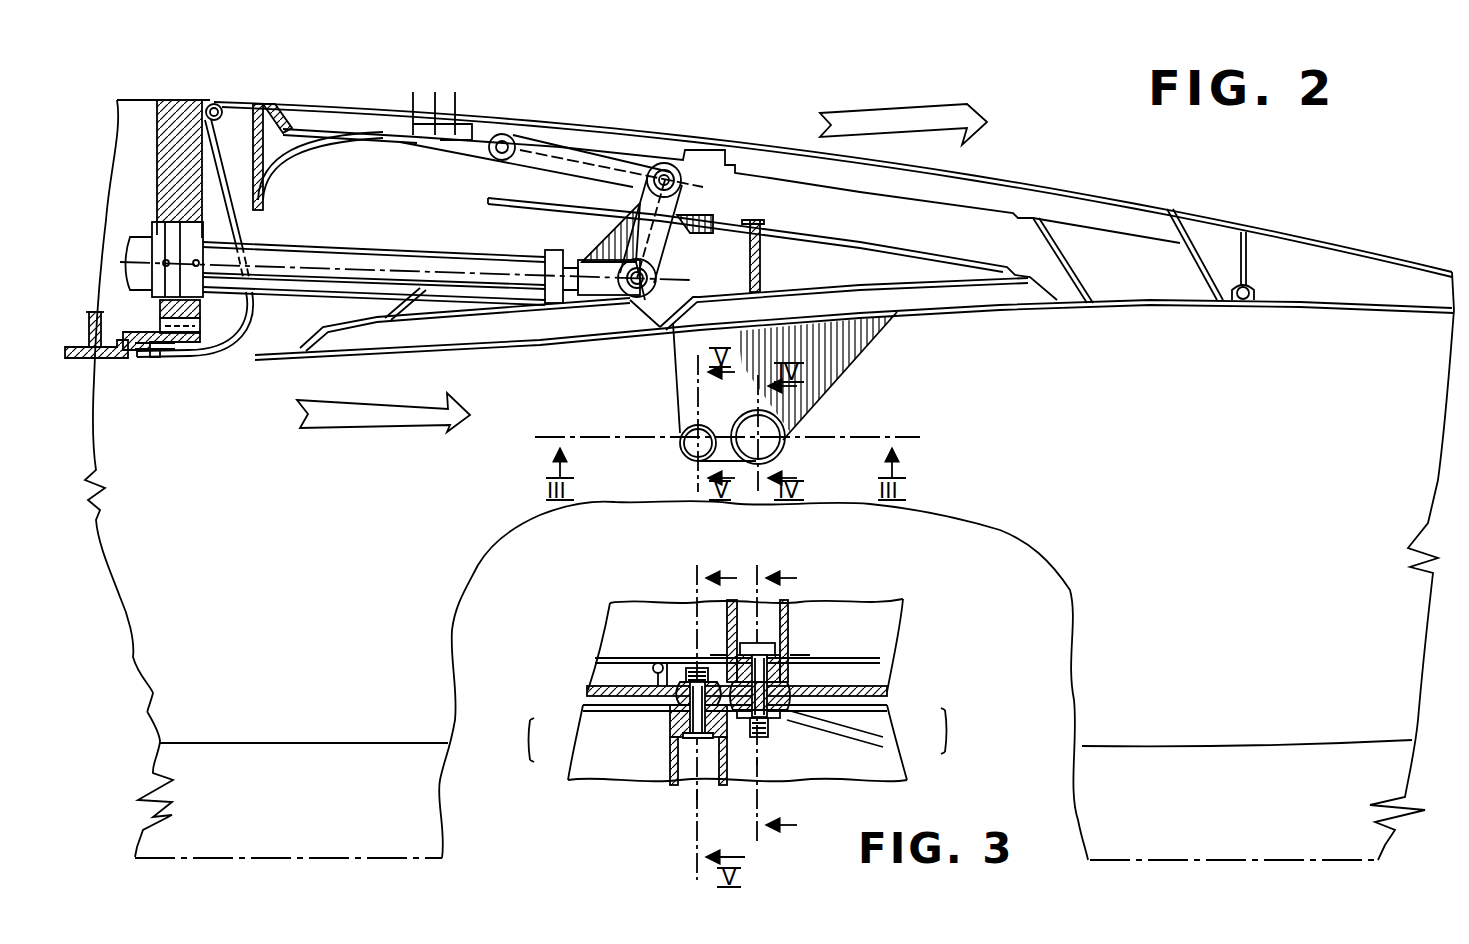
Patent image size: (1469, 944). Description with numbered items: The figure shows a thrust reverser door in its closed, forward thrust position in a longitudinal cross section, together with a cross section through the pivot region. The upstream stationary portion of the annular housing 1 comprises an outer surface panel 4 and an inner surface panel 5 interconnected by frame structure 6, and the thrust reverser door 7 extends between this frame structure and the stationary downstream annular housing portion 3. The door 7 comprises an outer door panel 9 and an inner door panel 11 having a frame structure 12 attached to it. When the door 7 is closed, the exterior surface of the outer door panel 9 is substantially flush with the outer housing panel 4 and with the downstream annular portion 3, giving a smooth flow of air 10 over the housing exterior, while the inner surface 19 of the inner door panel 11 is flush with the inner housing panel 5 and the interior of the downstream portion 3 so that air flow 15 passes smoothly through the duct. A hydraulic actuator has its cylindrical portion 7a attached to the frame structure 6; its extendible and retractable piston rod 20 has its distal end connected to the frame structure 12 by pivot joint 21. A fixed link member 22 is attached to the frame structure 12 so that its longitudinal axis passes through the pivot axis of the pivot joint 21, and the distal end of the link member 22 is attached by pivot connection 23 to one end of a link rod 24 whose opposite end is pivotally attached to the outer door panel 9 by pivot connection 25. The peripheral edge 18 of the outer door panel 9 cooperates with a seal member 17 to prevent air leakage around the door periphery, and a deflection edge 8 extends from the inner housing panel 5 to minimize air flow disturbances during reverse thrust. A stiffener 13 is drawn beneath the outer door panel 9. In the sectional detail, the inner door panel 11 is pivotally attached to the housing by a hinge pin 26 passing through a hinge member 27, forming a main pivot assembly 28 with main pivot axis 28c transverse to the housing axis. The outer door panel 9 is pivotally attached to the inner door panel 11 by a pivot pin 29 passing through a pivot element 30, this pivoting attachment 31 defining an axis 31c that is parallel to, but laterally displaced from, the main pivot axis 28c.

In FIG. 2, the annular housing 1 is at (116, 106).
In FIG. 2, the downstream annular housing portion 3 is at (1290, 233).
In FIG. 2, the outer surface panel 4 is at (180, 98).
In FIG. 2, the inner surface panel 5 is at (97, 360).
In FIG. 2, the frame structure 6 is at (150, 322).
In FIG. 2, the thrust reverser door 7 is at (998, 165).
In FIG. 2, the cylindrical portion 7a is at (306, 248).
In FIG. 2, the deflection edge 8 is at (250, 330).
In FIG. 2, the outer door panel 9 is at (1082, 212).
In FIG. 3, the outer door panel 9 is at (600, 690).
In FIG. 2, the flow of air 10 is at (848, 118).
In FIG. 2, the inner door panel 11 is at (425, 336).
In FIG. 3, the inner door panel 11 is at (852, 715).
In FIG. 2, the frame structure 12 is at (749, 218).
In FIG. 2, the stiffener 13 is at (276, 120).
In FIG. 2, the air flow 15 is at (400, 414).
In FIG. 2, the seal member 17 is at (215, 104).
In FIG. 2, the peripheral edge 18 is at (226, 103).
In FIG. 2, the inner surface 19 is at (525, 343).
In FIG. 2, the piston rod 20 is at (572, 296).
In FIG. 2, the pivot joint 21 is at (647, 302).
In FIG. 2, the fixed link member 22 is at (646, 165).
In FIG. 2, the pivot connection 23 is at (668, 166).
In FIG. 2, the link rod 24 is at (557, 145).
In FIG. 2, the pivot connection 25 is at (503, 130).
In FIG. 3, the hinge pin 26 is at (790, 713).
In FIG. 3, the hinge member 27 is at (790, 735).
In FIG. 2, the main pivot assembly 28 is at (762, 440).
In FIG. 3, the main pivot assembly 28 is at (857, 679).
In FIG. 3, the main pivot axis 28c is at (757, 757).
In FIG. 3, the pivot pin 29 is at (680, 722).
In FIG. 3, the pivot element 30 is at (680, 700).
In FIG. 2, the fastener 31 is at (690, 446).
In FIG. 3, the fastener 31 is at (615, 726).
In FIG. 3, the axis 31c is at (693, 800).